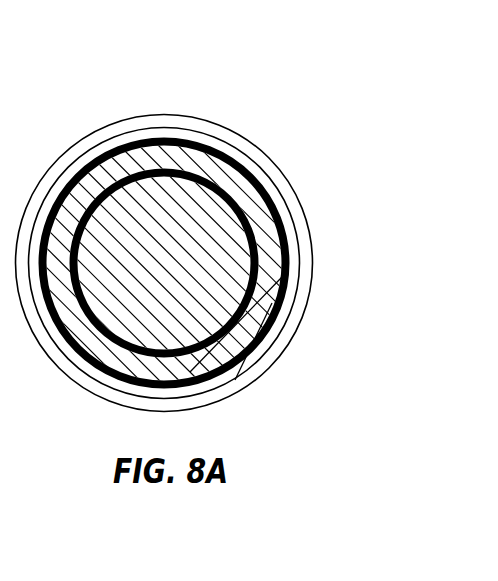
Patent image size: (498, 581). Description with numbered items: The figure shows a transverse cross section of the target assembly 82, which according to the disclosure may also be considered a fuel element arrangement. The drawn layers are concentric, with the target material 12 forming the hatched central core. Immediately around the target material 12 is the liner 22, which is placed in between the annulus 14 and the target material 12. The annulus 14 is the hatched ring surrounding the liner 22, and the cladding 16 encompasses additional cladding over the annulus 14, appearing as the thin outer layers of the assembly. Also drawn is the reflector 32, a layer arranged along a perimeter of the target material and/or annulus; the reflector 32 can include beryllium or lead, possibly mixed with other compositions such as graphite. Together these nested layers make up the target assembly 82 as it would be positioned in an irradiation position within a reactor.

The target assembly 82 is at (214, 104).
The target material 12 is at (268, 374).
The cladding 16 is at (115, 132).
The reflector 32 is at (170, 138).
The annulus 14 is at (268, 226).
The liner 22 is at (262, 289).